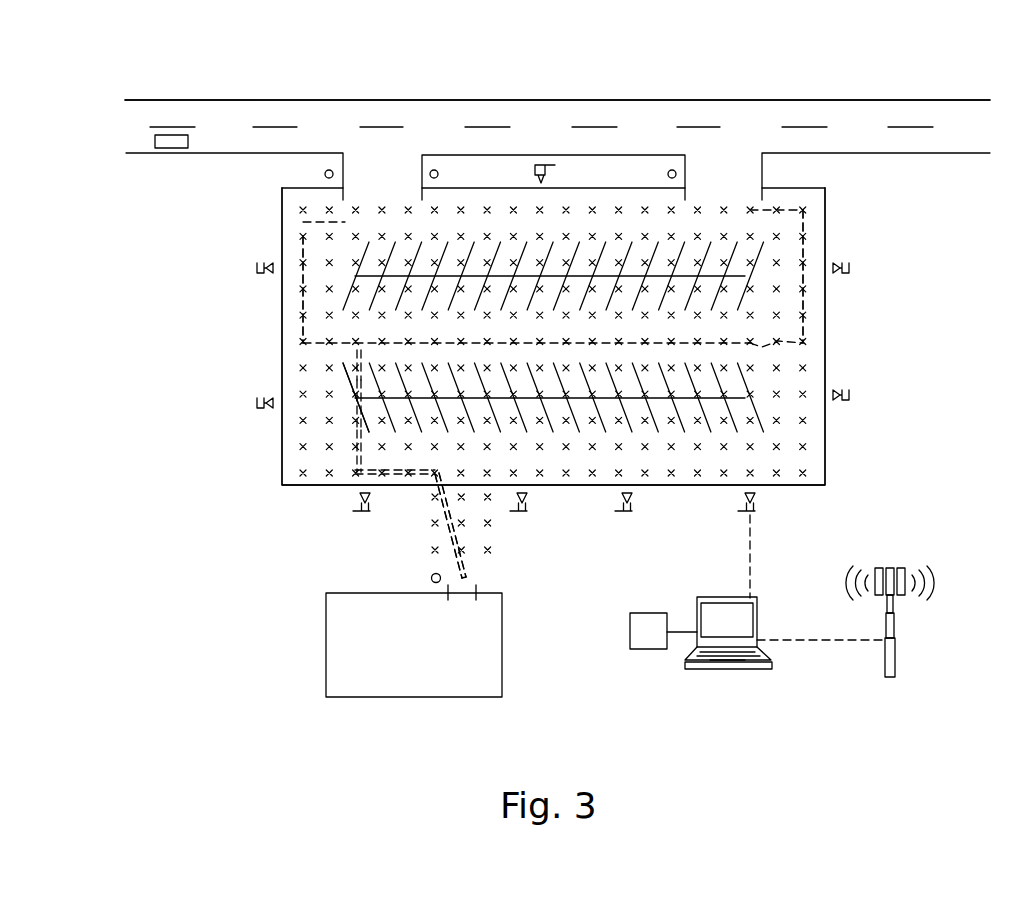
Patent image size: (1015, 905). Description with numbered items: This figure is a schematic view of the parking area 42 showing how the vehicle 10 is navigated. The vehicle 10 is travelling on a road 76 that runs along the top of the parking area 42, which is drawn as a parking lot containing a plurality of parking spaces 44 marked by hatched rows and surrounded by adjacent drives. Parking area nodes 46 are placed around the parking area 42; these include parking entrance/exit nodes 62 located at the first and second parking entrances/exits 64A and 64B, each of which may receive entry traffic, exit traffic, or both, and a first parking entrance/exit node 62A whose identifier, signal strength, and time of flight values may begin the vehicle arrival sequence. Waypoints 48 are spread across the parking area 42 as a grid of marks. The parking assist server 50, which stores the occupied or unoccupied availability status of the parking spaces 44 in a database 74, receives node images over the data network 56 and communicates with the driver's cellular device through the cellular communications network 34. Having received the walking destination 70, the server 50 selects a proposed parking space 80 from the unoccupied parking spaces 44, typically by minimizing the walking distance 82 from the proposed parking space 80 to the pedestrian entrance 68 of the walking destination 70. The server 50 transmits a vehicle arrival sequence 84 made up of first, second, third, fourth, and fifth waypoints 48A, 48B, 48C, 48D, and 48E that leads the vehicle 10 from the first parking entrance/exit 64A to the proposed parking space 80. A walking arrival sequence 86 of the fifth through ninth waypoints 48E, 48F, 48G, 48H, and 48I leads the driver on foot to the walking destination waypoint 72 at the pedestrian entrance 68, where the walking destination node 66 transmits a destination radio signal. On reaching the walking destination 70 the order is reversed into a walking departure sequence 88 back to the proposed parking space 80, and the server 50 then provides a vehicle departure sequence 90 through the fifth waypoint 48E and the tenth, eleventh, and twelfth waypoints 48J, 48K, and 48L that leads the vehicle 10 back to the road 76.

The vehicle 10 is at (165, 149).
The cellular communications network 34 is at (915, 630).
The parking area 42 is at (840, 231).
The parking spaces 44 is at (754, 386).
The parking area nodes 46 is at (777, 502).
The waypoints 48 is at (292, 200).
The first waypoint 48A is at (348, 222).
The second waypoint 48B is at (303, 234).
The third waypoint 48C is at (355, 348).
The fourth waypoint 48D is at (360, 362).
The fifth waypoint 48E is at (355, 396).
The sixth waypoint 48F is at (355, 436).
The seventh waypoint 48G is at (355, 474).
The eighth waypoint 48H is at (433, 498).
The ninth waypoint 48I is at (440, 516).
The tenth waypoint 48J is at (790, 340).
The eleventh waypoint 48K is at (806, 215).
The twelfth waypoint 48L is at (752, 210).
The parking assist server 50 is at (735, 670).
The data network 56 is at (752, 583).
The parking entrance/exit nodes 62 is at (452, 178).
The first parking entrance/exit node 62A is at (329, 170).
The first parking entrance/exit 64A is at (392, 170).
The second parking entrance/exit 64B is at (733, 168).
The walking destination node 66 is at (436, 583).
The pedestrian entrance 68 is at (462, 592).
The walking destination 70 is at (475, 697).
The walking destination waypoint 72 is at (470, 577).
The database 74 is at (650, 650).
The road 76 is at (545, 115).
The proposed parking space 80 is at (343, 366).
The walking distance 82 is at (440, 536).
The vehicle arrival sequence 84 is at (306, 277).
The walking arrival sequence 86 is at (467, 533).
The walking departure sequence 88 is at (470, 568).
The vehicle departure sequence 90 is at (815, 300).